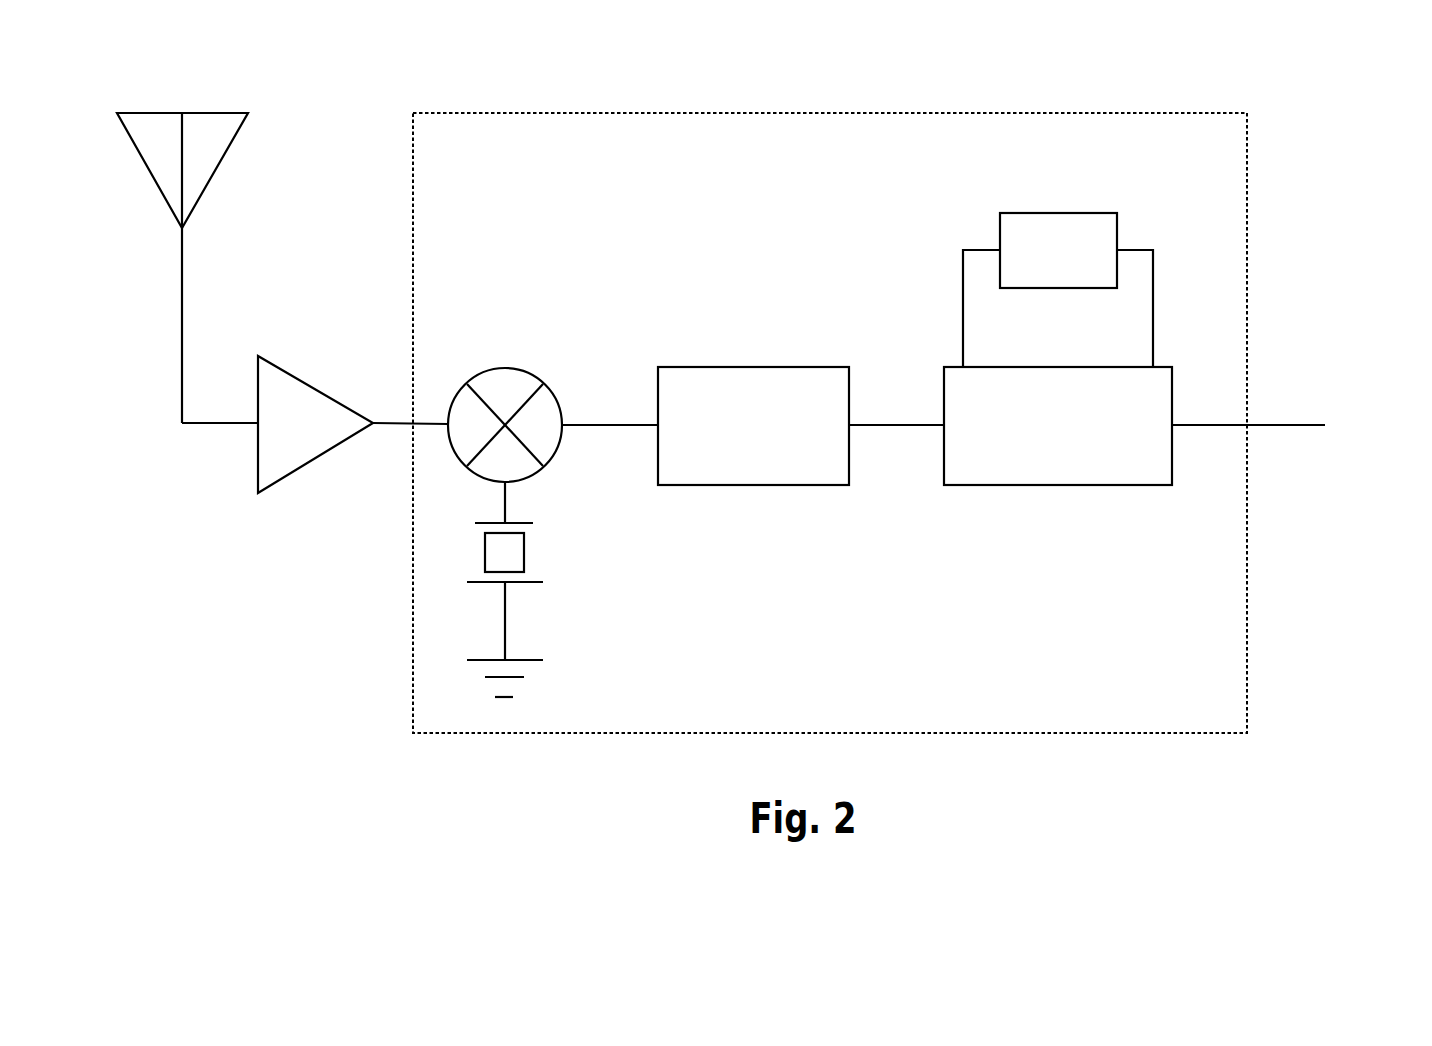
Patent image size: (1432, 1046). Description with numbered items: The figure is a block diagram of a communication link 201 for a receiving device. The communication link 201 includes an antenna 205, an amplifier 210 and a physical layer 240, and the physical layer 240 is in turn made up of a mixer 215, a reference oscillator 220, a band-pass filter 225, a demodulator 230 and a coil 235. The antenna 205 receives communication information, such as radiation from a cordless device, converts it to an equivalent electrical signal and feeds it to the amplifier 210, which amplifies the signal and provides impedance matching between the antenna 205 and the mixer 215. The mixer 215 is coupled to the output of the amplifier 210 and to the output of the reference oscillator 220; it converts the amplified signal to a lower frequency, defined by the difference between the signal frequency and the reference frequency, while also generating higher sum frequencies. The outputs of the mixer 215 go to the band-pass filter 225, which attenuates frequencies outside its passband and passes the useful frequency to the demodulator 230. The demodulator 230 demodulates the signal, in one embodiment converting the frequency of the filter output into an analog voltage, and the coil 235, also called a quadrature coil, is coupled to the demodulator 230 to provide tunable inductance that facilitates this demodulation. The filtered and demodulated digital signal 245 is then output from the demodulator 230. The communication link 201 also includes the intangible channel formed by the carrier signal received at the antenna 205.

The communication link 201 is at (769, 421).
The antenna 205 is at (240, 268).
The amplifier 210 is at (346, 464).
The mixer 215 is at (553, 381).
The reference oscillator 220 is at (572, 589).
The band-pass filter 225 is at (801, 426).
The demodulator 230 is at (1058, 426).
The coil 235 is at (1058, 290).
The physical layer 240 is at (1210, 193).
The filtered and demodulated digital signal 245 is at (1297, 498).